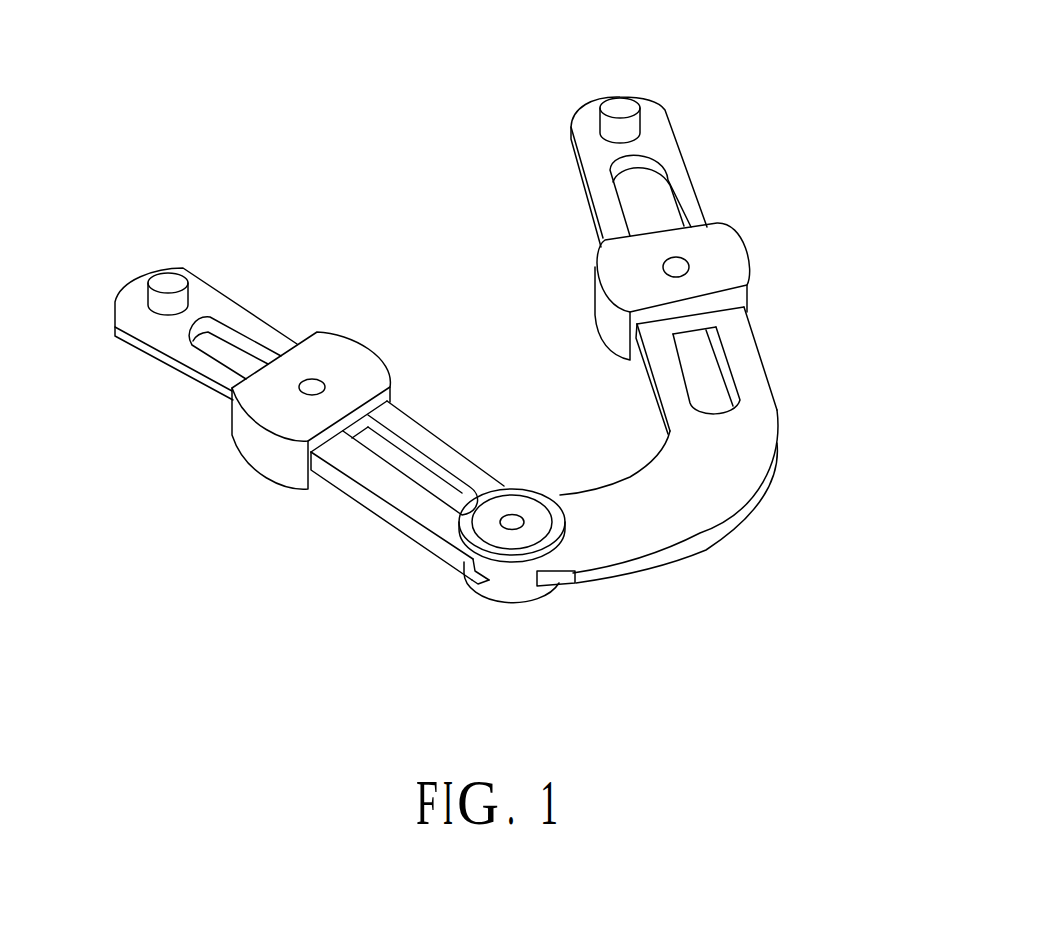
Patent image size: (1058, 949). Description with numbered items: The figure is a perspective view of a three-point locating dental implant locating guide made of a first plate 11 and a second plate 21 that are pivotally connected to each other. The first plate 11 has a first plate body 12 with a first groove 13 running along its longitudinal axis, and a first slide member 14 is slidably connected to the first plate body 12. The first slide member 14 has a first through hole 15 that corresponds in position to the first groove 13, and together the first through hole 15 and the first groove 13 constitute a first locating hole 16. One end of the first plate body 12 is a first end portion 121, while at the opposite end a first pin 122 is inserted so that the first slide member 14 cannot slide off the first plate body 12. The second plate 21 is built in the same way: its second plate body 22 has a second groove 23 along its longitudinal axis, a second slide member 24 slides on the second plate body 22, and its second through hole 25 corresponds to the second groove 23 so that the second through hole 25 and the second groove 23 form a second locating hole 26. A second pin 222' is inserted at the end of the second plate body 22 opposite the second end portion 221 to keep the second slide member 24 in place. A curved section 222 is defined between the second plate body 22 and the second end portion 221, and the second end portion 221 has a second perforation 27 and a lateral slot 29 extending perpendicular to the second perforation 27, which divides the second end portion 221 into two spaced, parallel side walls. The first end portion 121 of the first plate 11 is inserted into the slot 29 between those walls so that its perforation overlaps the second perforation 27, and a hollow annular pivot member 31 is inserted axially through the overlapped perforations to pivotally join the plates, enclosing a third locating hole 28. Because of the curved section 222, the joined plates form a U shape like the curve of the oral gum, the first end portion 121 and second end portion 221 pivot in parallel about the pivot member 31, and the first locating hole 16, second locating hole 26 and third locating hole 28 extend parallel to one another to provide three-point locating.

The first plate 11 is at (264, 300).
The first pin 122 is at (168, 287).
The first slide member 14 is at (277, 466).
The first through hole 15 is at (318, 384).
The first locating hole 16 is at (448, 335).
The first groove 13 is at (385, 422).
The first plate body 12 is at (417, 440).
The second perforation 27 is at (457, 548).
The second end portion 221 is at (485, 490).
The third locating hole 28 is at (511, 514).
The pivot member 31 is at (538, 506).
The first end portion 121 is at (511, 590).
The slot 29 is at (558, 578).
The second plate 21 is at (697, 130).
The second pin 222' is at (685, 81).
The second groove 23 is at (675, 200).
The second through hole 25 is at (672, 258).
The second slide member 24 is at (754, 299).
The second locating hole 26 is at (823, 152).
The second plate body 22 is at (746, 368).
The curved section 222 is at (685, 504).